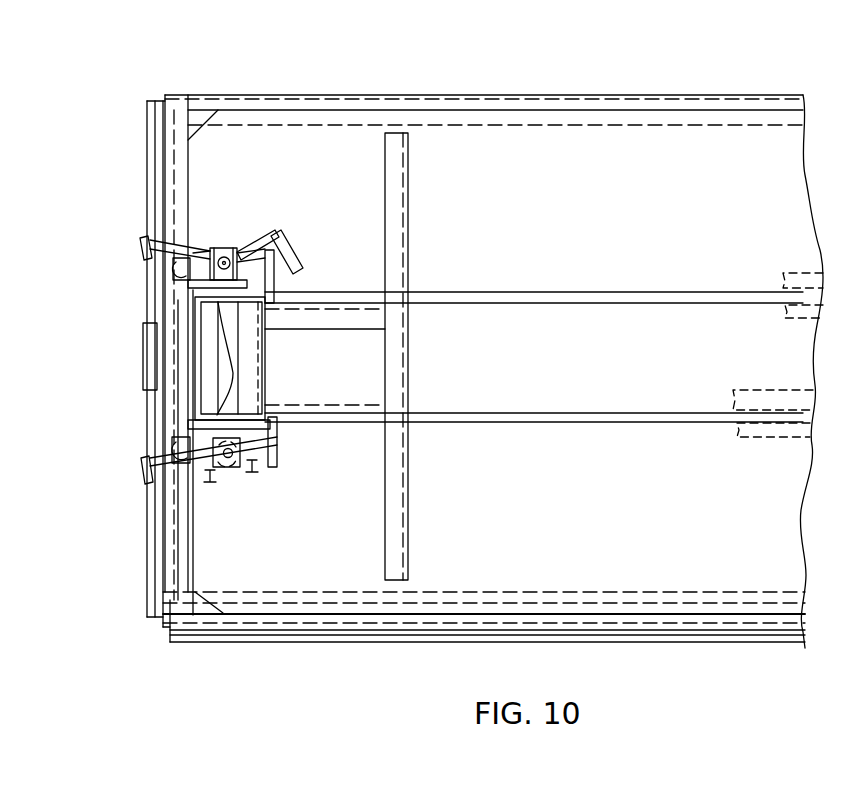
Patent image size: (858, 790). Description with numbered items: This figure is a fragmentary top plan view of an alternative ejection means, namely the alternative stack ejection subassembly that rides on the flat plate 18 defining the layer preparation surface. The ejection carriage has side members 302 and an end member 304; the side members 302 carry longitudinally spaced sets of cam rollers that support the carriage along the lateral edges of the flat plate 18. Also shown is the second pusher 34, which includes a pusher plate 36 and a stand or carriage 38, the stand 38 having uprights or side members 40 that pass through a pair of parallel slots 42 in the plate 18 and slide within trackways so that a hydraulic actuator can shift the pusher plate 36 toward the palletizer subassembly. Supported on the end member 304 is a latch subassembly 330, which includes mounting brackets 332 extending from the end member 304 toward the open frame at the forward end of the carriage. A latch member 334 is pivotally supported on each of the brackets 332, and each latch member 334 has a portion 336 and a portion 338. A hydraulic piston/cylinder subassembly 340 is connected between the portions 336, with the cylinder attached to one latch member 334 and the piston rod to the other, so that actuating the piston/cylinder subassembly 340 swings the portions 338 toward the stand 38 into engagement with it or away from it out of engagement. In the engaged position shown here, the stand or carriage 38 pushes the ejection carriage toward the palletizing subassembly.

The flat plate 18 is at (659, 186).
The second pusher 34 is at (412, 246).
The pusher plate 36 is at (408, 185).
The stand or carriage 38 is at (250, 352).
The uprights or side members 40 is at (233, 373).
The parallel slots 42 is at (617, 417).
The side members 302 is at (320, 97).
The end member 304 is at (168, 153).
The latch subassembly 330 is at (132, 284).
The mounting brackets 332 is at (217, 280).
The latch member 334 is at (258, 232).
The portion 336 is at (193, 253).
The portion 338 is at (287, 243).
The hydraulic piston/cylinder subassembly 340 is at (178, 343).